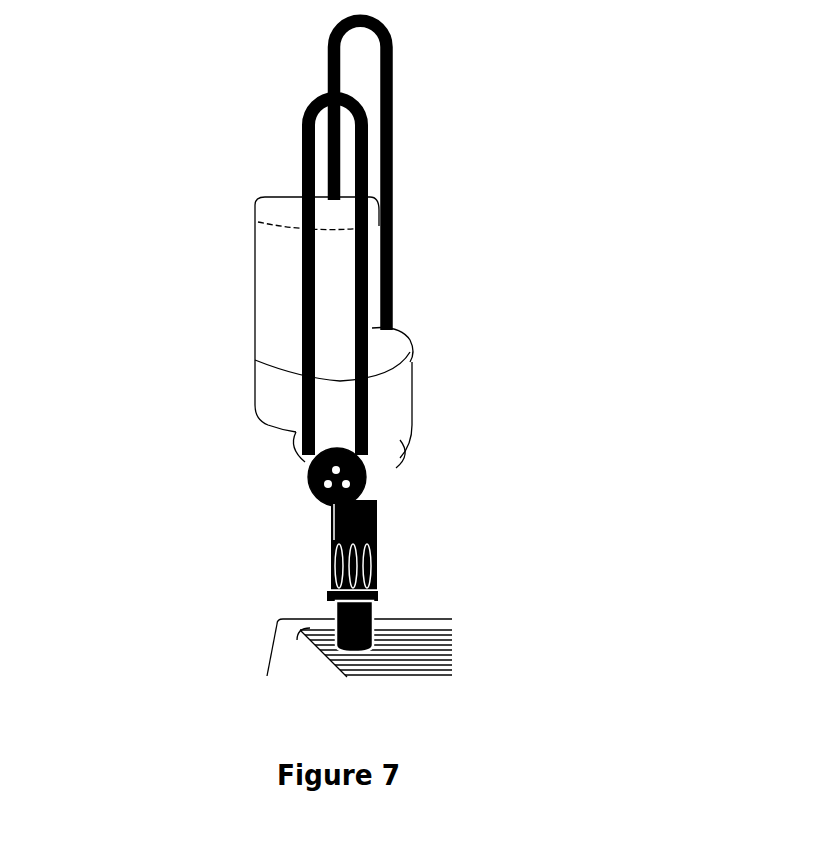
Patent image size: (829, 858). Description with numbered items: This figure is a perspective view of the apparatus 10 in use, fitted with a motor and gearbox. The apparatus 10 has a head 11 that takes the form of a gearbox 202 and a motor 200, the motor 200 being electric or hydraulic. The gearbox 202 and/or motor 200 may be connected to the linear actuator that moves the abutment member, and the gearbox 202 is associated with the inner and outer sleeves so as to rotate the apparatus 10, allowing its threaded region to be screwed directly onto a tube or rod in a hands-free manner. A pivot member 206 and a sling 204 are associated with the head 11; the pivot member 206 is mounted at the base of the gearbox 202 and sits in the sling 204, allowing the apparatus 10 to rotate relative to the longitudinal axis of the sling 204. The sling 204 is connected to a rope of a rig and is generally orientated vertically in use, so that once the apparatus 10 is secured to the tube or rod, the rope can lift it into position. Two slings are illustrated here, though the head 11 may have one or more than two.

The apparatus 10 is at (384, 615).
The head 11 is at (346, 271).
The motor 200 is at (268, 316).
The gearbox 202 is at (262, 407).
The sling 204 is at (400, 102).
The pivot member 206 is at (368, 465).